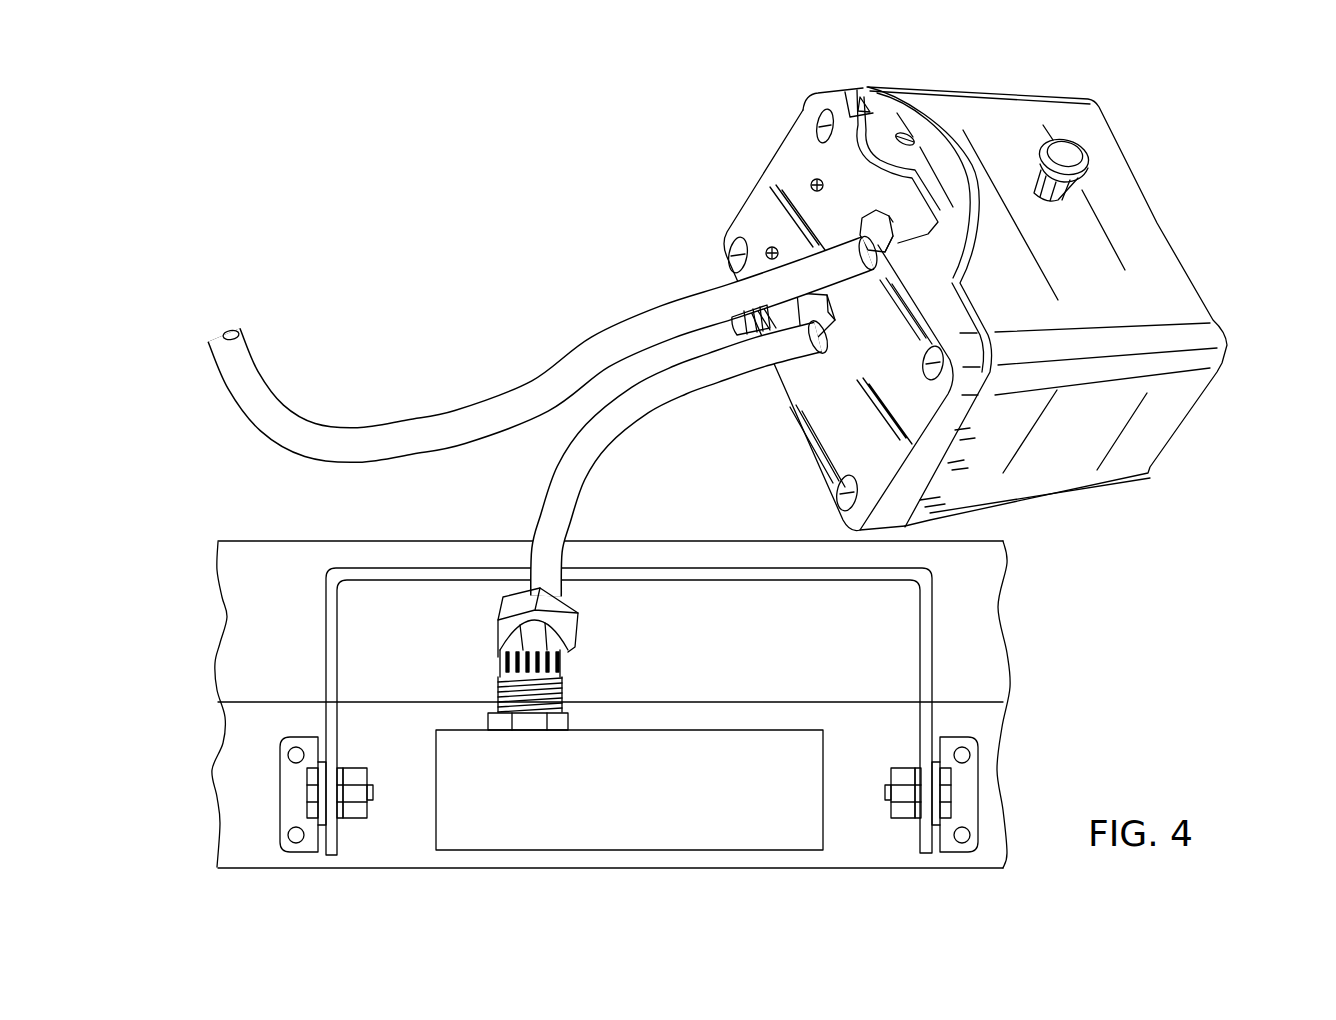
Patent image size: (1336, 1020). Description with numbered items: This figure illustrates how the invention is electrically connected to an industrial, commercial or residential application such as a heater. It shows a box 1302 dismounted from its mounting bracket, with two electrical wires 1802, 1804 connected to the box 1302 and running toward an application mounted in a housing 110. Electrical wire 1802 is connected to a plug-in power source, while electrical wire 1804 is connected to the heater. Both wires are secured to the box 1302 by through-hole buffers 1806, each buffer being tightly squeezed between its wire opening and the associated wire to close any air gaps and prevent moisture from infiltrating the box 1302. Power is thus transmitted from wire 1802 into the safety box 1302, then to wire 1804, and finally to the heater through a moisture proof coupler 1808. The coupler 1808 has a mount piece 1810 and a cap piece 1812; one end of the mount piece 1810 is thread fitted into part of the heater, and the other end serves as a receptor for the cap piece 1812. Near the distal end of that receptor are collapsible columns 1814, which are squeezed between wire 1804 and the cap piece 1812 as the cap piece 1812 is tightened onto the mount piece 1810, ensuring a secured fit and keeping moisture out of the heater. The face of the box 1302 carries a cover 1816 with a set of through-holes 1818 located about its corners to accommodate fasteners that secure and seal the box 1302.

The housing 110 is at (977, 592).
The box 1302 is at (1090, 290).
The electrical wire 1802 is at (455, 422).
The electrical wire 1804 is at (570, 497).
The through-hole buffers 1806 is at (862, 227).
The moisture proof coupler 1808 is at (588, 637).
The mount piece 1810 is at (552, 686).
The cap piece 1812 is at (568, 612).
The collapsible columns 1814 is at (546, 666).
The cover 1816 is at (830, 400).
The through-holes 1818 is at (930, 370).